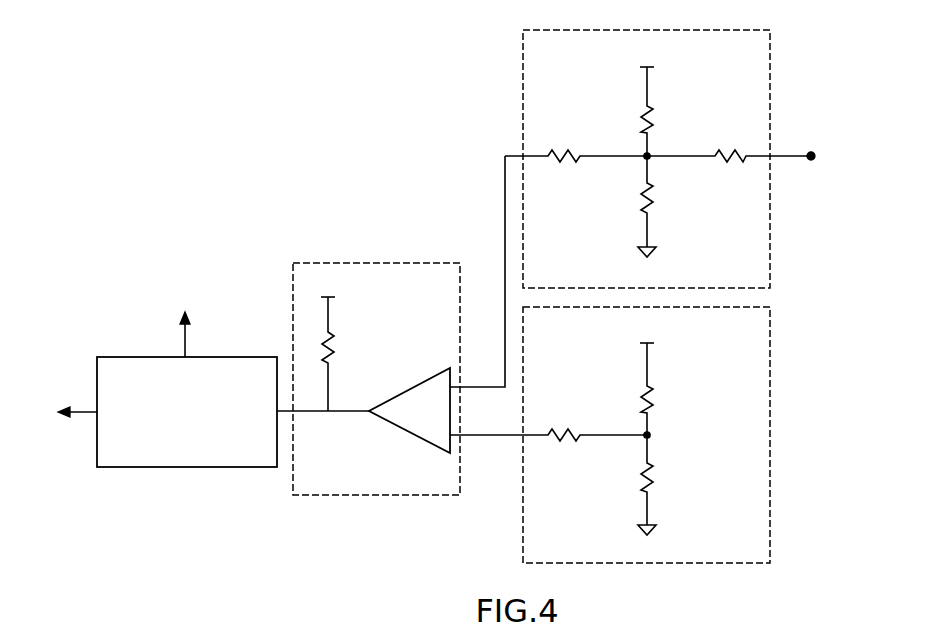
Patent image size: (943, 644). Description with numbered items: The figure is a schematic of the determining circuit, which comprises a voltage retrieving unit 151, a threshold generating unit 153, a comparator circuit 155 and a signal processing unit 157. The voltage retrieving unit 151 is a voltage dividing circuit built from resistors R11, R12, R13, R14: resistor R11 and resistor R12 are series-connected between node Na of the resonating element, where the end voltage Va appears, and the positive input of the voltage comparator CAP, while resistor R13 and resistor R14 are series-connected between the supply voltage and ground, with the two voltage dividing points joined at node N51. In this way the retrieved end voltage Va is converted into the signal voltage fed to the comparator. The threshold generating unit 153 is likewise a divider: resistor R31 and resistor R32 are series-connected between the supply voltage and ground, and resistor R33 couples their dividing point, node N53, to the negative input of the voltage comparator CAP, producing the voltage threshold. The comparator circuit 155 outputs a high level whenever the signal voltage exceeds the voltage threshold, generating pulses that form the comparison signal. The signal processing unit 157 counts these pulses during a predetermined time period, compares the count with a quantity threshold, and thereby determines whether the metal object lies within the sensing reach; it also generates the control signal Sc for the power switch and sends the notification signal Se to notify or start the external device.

The voltage retrieving unit 151 is at (679, 159).
The threshold generating unit 153 is at (652, 435).
The comparator circuit 155 is at (399, 358).
The signal processing unit 157 is at (169, 452).
The node N51 is at (650, 153).
The node N53 is at (650, 432).
The resistor R11 is at (729, 144).
The resistor R12 is at (576, 144).
The resistor R13 is at (626, 111).
The resistor R14 is at (626, 201).
The resistor R31 is at (626, 389).
The resistor R32 is at (626, 480).
The resistor R33 is at (548, 424).
The voltage comparator CAP is at (398, 430).
The end voltage Va is at (814, 143).
The node Na is at (813, 158).
The control signal Sc is at (185, 321).
The notification signal Se is at (61, 411).